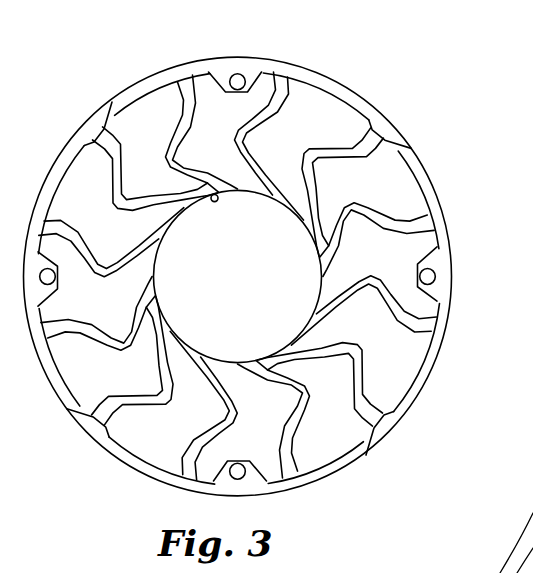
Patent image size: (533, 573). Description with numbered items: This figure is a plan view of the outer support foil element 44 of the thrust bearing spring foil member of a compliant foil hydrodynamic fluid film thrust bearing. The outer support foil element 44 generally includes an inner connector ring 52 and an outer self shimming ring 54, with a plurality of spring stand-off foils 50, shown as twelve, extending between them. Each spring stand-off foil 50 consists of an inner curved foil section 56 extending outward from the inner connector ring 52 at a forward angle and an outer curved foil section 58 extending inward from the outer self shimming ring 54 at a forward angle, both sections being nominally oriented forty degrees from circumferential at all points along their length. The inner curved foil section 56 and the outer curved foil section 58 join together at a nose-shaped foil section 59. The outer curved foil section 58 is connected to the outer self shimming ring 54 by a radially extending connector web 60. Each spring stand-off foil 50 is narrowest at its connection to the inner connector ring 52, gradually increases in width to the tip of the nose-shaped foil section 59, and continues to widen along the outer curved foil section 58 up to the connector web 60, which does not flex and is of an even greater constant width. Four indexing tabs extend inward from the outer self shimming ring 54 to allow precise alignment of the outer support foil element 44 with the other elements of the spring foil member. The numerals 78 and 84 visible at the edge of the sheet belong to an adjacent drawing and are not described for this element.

The outer support foil element 44 is at (447, 68).
The spring stand-off foils 50 is at (272, 136).
The inner connector ring 52 is at (146, 148).
The outer self shimming ring 54 is at (442, 358).
The inner curved foil section 56 is at (316, 191).
The outer curved foil section 58 is at (332, 163).
The nose-shaped foil section 59 is at (303, 160).
The connector web 60 is at (381, 145).
The adjacent figure element 78 is at (522, 571).
The adjacent figure element 84 is at (522, 515).